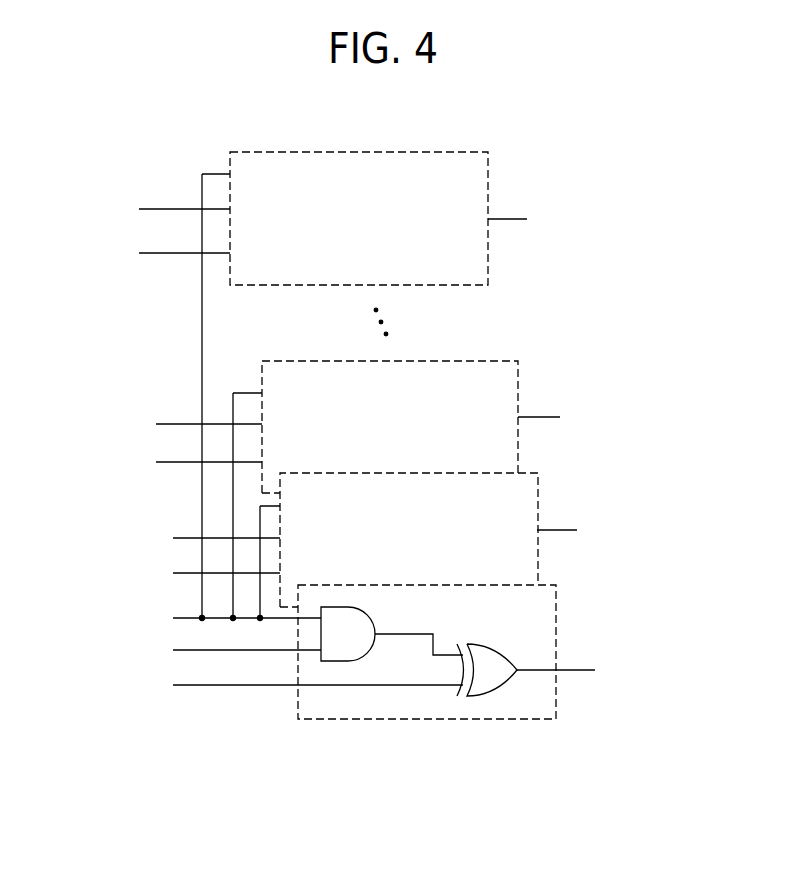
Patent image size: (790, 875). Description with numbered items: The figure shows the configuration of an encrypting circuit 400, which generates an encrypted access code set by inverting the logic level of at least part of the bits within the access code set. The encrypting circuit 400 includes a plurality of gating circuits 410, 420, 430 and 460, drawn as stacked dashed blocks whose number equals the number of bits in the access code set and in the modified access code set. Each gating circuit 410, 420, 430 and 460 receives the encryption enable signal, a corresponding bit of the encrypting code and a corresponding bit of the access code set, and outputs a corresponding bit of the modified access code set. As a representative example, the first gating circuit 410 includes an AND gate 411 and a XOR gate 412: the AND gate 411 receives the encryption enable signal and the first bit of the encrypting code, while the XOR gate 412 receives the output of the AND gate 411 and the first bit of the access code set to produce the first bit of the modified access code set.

The encrypting circuit 400 is at (113, 126).
The first gating circuit 410 is at (556, 611).
The AND gate 411 is at (372, 612).
The XOR gate 412 is at (485, 644).
The gating circuit 420 is at (538, 498).
The gating circuit 430 is at (518, 386).
The gating circuit 460 is at (488, 178).